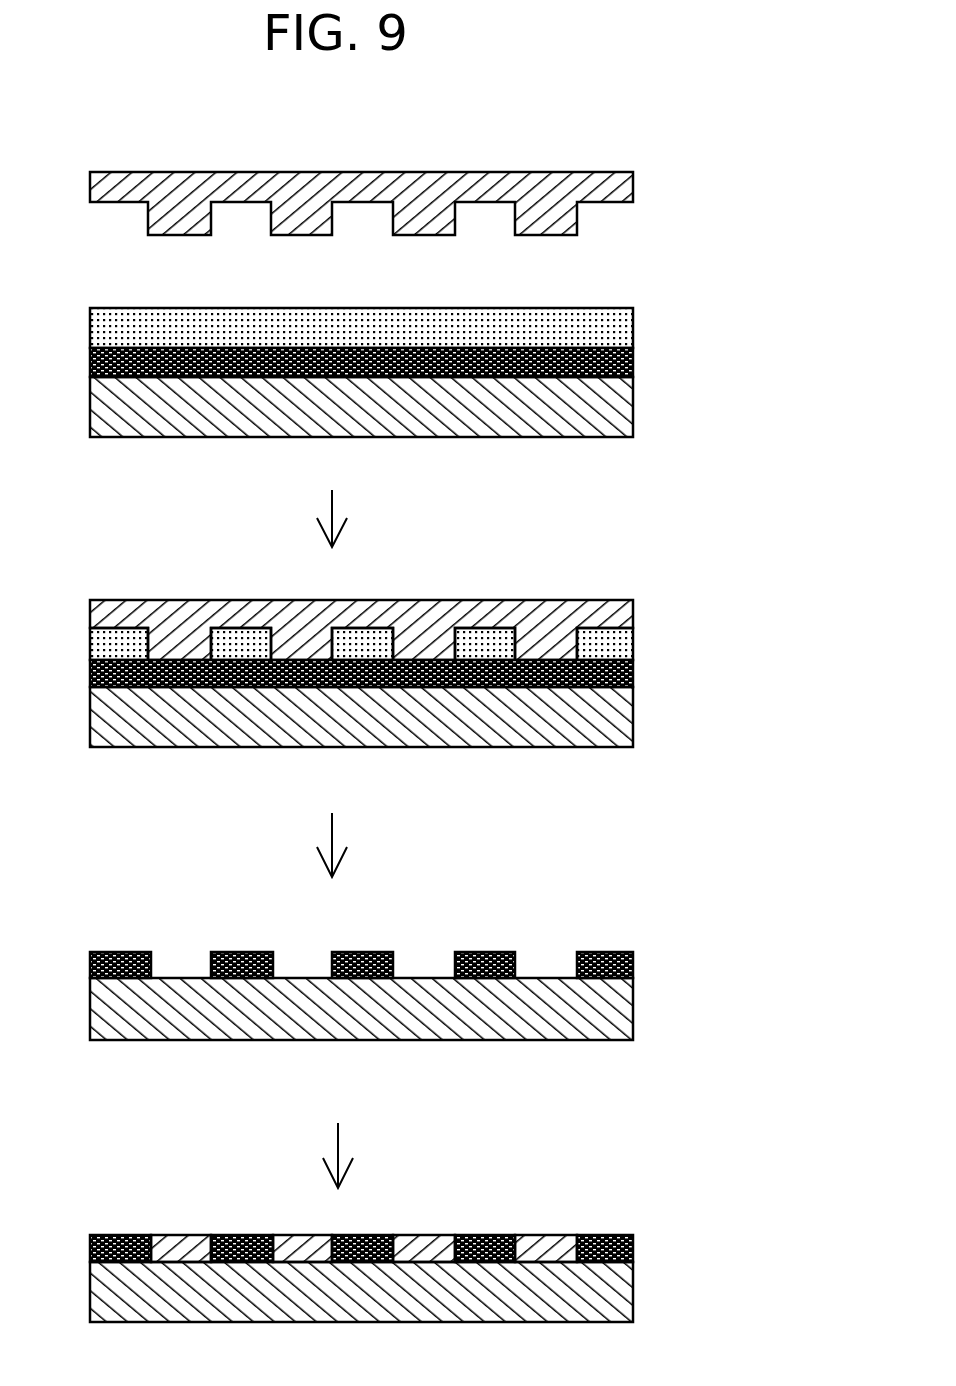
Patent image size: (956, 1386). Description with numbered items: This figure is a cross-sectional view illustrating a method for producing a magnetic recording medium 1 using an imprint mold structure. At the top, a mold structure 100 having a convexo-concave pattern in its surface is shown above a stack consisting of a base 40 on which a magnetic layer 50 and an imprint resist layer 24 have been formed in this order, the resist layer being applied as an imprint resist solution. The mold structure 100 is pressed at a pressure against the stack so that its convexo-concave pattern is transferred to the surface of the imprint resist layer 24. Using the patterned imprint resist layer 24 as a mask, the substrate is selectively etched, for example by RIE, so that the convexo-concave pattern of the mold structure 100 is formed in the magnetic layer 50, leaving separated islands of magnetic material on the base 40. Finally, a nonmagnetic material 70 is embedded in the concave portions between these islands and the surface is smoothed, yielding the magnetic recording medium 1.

The mold structure 100 is at (453, 172).
The imprint resist layer 24 is at (588, 322).
The magnetic layer 50 is at (635, 365).
The base 40 is at (633, 430).
The nonmagnetic material 70 is at (167, 1235).
The magnetic recording medium 1 is at (398, 1228).